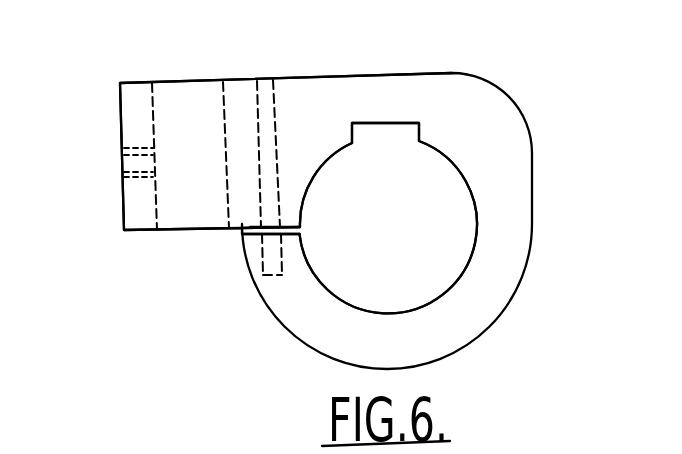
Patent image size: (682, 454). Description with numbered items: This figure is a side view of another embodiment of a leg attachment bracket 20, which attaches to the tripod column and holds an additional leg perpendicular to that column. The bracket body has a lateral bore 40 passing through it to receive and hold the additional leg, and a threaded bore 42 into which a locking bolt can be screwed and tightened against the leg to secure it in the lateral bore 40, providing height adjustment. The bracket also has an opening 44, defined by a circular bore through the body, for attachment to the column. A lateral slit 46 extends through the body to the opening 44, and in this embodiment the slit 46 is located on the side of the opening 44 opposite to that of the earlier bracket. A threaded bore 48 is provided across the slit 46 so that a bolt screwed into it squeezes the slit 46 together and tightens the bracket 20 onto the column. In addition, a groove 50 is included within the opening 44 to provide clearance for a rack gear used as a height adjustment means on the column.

The leg attachment bracket 20 is at (595, 48).
The lateral bore 40 is at (172, 98).
The threaded bore 42 is at (123, 164).
The opening 44 is at (435, 187).
The lateral slit 46 is at (242, 233).
The threaded bore 48 is at (272, 92).
The groove 50 is at (397, 128).